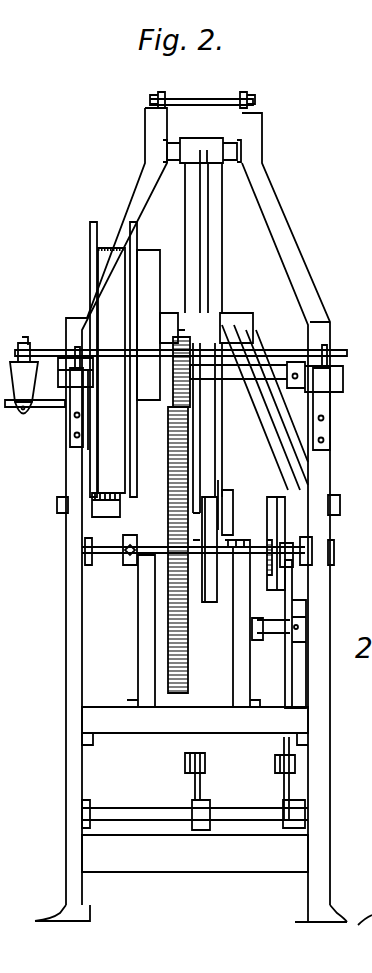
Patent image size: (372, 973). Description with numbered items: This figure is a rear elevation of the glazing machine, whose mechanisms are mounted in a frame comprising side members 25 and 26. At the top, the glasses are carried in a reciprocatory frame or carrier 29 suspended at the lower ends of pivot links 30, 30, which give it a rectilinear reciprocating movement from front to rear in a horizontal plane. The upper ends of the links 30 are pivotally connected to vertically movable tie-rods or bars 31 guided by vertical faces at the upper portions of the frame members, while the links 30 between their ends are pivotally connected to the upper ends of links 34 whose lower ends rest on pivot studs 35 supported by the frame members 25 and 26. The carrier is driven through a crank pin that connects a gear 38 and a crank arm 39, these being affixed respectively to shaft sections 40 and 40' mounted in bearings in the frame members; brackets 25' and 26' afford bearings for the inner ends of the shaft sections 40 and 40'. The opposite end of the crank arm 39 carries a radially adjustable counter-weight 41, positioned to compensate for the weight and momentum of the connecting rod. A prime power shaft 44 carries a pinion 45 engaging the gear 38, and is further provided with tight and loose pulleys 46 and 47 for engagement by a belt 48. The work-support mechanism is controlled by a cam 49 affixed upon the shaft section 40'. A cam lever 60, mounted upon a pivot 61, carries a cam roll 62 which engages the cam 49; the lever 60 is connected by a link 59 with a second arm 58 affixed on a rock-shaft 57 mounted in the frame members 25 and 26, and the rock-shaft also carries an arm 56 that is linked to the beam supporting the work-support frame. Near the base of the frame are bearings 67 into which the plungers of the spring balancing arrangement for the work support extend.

The side member 25 is at (299, 517).
The side member 26 is at (158, 514).
The bracket 25' is at (227, 627).
The bracket 26' is at (125, 631).
The reciprocatory frame or carrier 29 is at (232, 490).
The pivot links 30 is at (212, 283).
The tie-rods or bars 31 is at (230, 143).
The links 34 is at (168, 330).
The pivot studs 35 is at (62, 510).
The gear 38 is at (190, 673).
The crank arm 39 is at (195, 555).
The shaft section 40 is at (193, 561).
The shaft section 40' is at (331, 554).
The counter-weight 41 is at (207, 590).
The prime power shaft 44 is at (272, 372).
The pinion 45 is at (170, 380).
The tight pulley 46 is at (150, 268).
The loose pulley 47 is at (115, 285).
The belt 48 is at (112, 250).
The cam 49 is at (230, 500).
The arm 56 is at (193, 788).
The rock-shaft 57 is at (112, 812).
The second arm 58 is at (285, 792).
The link 59 is at (278, 764).
The cam lever 60 is at (288, 675).
The pivot 61 is at (272, 625).
The cam roll 62 is at (268, 530).
The bearings 67 is at (361, 891).